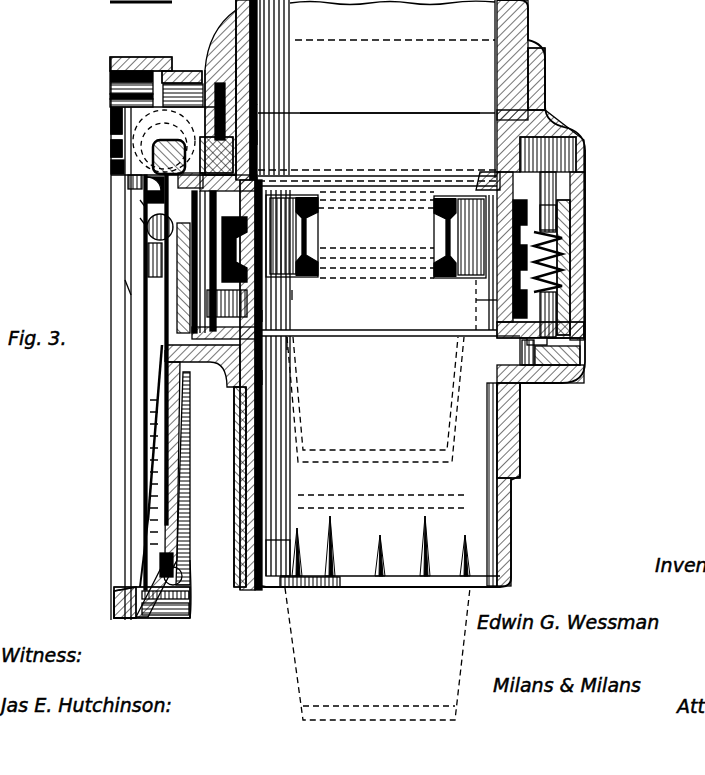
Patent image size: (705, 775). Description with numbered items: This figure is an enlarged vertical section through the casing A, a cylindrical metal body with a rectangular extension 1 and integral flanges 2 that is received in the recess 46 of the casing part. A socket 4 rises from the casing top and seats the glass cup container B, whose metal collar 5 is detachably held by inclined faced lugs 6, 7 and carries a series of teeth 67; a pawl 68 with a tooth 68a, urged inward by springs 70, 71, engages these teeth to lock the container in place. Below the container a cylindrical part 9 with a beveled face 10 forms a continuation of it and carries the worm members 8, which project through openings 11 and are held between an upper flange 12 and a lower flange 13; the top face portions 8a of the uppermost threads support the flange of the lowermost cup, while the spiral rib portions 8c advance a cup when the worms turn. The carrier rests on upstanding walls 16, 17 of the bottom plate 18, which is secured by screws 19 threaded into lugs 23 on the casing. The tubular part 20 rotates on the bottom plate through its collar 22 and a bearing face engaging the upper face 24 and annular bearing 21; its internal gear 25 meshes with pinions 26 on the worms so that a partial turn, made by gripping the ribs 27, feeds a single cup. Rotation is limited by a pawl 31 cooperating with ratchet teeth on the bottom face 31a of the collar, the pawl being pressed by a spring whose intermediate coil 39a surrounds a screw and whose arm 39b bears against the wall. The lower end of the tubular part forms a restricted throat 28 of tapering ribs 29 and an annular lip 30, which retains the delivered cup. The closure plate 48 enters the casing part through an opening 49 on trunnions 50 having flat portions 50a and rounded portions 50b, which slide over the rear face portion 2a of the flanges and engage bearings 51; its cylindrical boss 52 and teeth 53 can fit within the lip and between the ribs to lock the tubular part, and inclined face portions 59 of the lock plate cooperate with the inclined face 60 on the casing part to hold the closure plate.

The rectangularly shaped extension 1 is at (152, 6).
The recess 46 is at (167, 58).
The socket 4 is at (211, 46).
The flange 2 is at (190, 66).
The metal collar 5 is at (250, 82).
The teeth 67 is at (250, 100).
The lug 7 is at (256, 137).
The lug 6 is at (258, 159).
The cup container B is at (388, 107).
The beveled face 10 is at (497, 178).
The lug 23 is at (572, 145).
The casing A is at (588, 166).
The screw 19 is at (568, 218).
The intermediate coil 39a is at (568, 244).
The upstanding wall 17 is at (575, 273).
The upper arm 39b is at (578, 290).
The internal gear 25 is at (580, 325).
The bottom face 31a is at (580, 353).
The pawl 31 is at (580, 358).
The bottom plate 18 is at (532, 388).
The rib 27 is at (520, 452).
The collar 22 is at (520, 339).
The annular bearing 21 is at (262, 376).
The lower lateral flange 13 is at (300, 341).
The upper face 24 is at (270, 315).
The pinion 26 is at (282, 291).
The cylindrical part 9 is at (418, 290).
The worm member 8 is at (432, 231).
The top face portion 8a is at (309, 196).
The spiral rib portion 8c is at (430, 258).
The opening 11 is at (432, 208).
The upper lateral flange 12 is at (232, 236).
The rear face portion 2a is at (168, 217).
The pawl 68 is at (164, 142).
The tooth 68a is at (222, 136).
The spring 71 is at (118, 127).
The spring 70 is at (118, 147).
The rounded portion 50b is at (138, 204).
The flat front face portion 50a is at (140, 222).
The trunnion 50 is at (140, 250).
The upstanding wall 16 is at (178, 290).
The door or closure plate 48 is at (152, 405).
The cylindrical boss 52 is at (150, 484).
The teeth 53 is at (160, 570).
The bearing 51 is at (180, 580).
The inclined face 60 is at (116, 604).
The inclined face portion 59 is at (138, 618).
The opening 49 is at (175, 620).
The restricted throat portion 28 is at (283, 555).
The tapering rib 29 is at (378, 553).
The annular lip 30 is at (264, 588).
The tubular part 20 is at (240, 446).